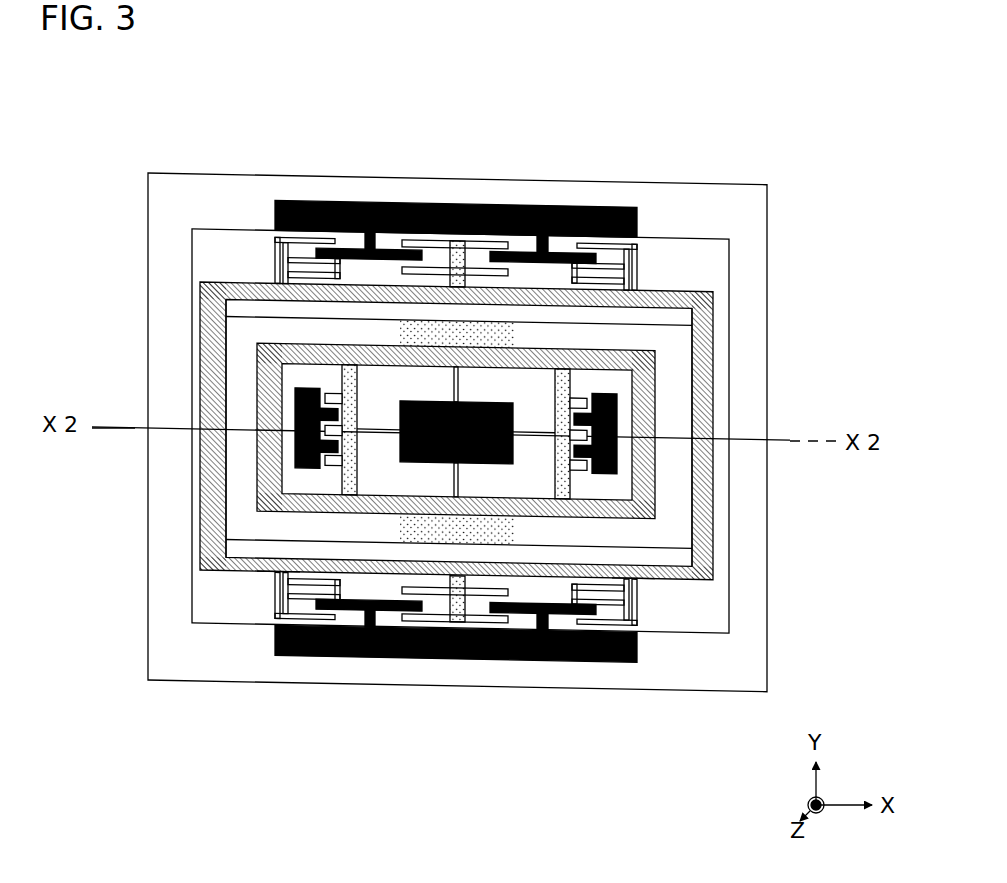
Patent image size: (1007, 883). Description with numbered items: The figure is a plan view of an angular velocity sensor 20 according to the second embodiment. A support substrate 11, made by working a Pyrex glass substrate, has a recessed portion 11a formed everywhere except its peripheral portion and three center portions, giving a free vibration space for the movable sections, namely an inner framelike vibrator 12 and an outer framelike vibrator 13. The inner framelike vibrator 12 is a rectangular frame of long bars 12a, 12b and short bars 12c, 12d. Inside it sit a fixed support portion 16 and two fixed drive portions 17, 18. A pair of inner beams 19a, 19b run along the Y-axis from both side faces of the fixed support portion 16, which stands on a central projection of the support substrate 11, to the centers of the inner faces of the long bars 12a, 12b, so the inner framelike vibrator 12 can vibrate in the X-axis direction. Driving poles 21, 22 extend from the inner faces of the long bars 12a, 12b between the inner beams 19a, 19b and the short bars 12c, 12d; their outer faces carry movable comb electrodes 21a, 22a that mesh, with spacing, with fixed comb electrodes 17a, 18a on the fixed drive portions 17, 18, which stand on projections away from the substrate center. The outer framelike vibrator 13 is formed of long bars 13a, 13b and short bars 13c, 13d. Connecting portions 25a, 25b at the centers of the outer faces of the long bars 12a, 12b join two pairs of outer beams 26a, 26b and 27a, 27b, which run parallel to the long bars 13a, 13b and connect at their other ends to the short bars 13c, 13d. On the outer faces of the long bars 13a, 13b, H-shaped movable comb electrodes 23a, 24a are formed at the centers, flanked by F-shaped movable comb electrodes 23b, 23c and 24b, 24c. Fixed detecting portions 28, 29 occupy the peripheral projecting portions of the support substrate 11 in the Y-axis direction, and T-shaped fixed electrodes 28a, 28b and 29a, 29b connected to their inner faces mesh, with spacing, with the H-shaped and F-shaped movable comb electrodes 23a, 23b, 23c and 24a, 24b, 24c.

The support substrate 11 is at (773, 206).
The recessed portion 11a is at (717, 270).
The inner framelike vibrator 12 is at (472, 510).
The long bar 12a is at (303, 343).
The long bar 12b is at (330, 510).
The short bar 12c is at (642, 421).
The short bar 12d is at (262, 402).
The outer framelike vibrator 13 is at (455, 434).
The long bar 13a is at (360, 282).
The long bar 13b is at (283, 572).
The short bar 13c is at (715, 351).
The short bar 13d is at (204, 356).
The fixed support portion 16 is at (480, 400).
The fixed drive portion 17 is at (703, 455).
The fixed comb electrode 17a is at (596, 462).
The fixed drive portion 18 is at (203, 453).
The fixed comb electrode 18a is at (296, 435).
The inner beam 19a is at (456, 380).
The inner beam 19b is at (456, 473).
The angular velocity sensor 20 is at (472, 445).
The driving pole 21 is at (630, 546).
The movable comb electrode 21a is at (640, 509).
The driving pole 22 is at (300, 522).
The movable comb electrode 22a is at (262, 502).
The H-shaped movable comb electrode 23a is at (478, 246).
The F-shaped movable comb electrode 23b is at (611, 245).
The F-shaped movable comb electrode 23c is at (283, 238).
The H-shaped movable comb electrode 24a is at (407, 661).
The F-shaped movable comb electrode 24b is at (630, 611).
The F-shaped movable comb electrode 24c is at (283, 661).
The connecting portion 25a is at (278, 282).
The connecting portion 25b is at (605, 660).
The outer beam 26a is at (600, 327).
The outer beam 26b is at (300, 327).
The outer beam 27a is at (637, 575).
The outer beam 27b is at (278, 577).
The fixed detecting portion 28 is at (443, 202).
The T-shaped fixed electrode 28a is at (570, 215).
The T-shaped fixed electrode 28b is at (407, 200).
The fixed detecting portion 29 is at (460, 661).
The T-shaped fixed electrode 29a is at (567, 661).
The T-shaped fixed electrode 29b is at (333, 661).